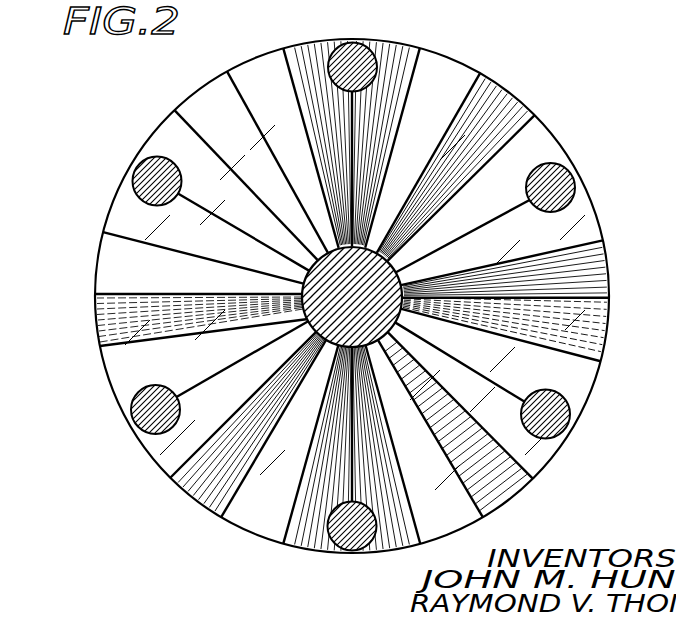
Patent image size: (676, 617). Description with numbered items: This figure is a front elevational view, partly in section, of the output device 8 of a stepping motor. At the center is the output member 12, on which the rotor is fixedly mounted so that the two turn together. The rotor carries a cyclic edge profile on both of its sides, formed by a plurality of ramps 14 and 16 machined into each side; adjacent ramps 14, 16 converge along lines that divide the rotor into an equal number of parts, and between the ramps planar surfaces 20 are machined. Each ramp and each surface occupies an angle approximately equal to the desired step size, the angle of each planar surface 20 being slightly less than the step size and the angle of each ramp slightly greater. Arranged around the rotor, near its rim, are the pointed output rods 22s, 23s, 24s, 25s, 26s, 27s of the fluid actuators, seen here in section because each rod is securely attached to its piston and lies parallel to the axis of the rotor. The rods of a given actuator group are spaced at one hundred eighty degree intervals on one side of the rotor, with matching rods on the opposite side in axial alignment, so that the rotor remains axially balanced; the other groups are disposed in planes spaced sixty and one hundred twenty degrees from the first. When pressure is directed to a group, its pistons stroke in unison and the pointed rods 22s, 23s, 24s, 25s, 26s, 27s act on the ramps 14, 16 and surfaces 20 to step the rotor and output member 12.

The output device 8 is at (538, 88).
The output member 12 is at (350, 295).
The ramp 14 is at (160, 142).
The ramp 16 is at (207, 100).
The planar surface 20 is at (263, 75).
The pointed output rod 22s is at (356, 52).
The pointed output rod 23s is at (567, 167).
The pointed output rod 24s is at (578, 407).
The pointed output rod 25s is at (340, 555).
The pointed output rod 26s is at (138, 423).
The pointed output rod 27s is at (147, 183).